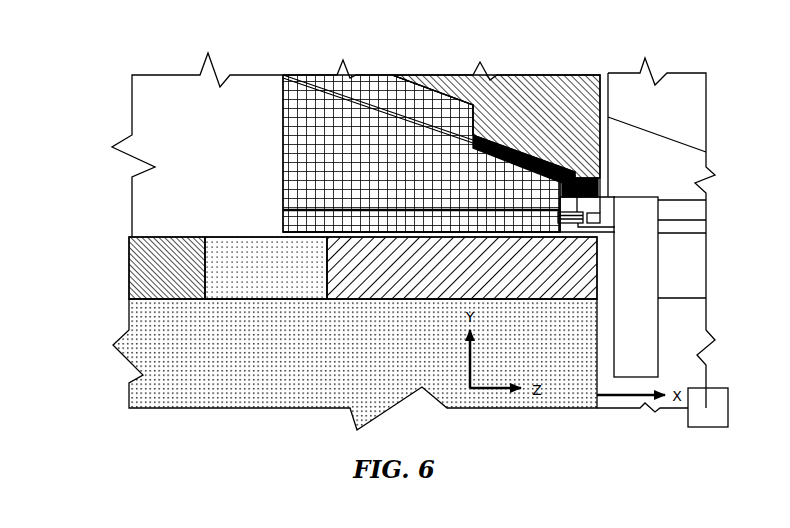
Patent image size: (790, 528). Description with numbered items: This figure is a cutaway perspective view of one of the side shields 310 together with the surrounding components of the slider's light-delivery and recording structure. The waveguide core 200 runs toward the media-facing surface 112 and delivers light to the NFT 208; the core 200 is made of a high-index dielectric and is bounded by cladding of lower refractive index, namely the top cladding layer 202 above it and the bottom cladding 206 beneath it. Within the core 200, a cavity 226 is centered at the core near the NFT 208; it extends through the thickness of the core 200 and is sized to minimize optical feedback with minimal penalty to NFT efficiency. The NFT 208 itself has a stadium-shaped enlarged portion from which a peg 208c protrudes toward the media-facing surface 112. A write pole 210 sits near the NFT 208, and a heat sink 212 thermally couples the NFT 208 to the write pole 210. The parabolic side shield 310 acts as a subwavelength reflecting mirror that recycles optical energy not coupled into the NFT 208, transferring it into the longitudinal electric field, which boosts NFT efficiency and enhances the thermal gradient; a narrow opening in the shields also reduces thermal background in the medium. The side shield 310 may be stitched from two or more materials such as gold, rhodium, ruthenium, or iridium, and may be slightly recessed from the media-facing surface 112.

The top cladding layer 202 is at (145, 99).
The heat sink 212 is at (295, 152).
The NFT 208 is at (283, 213).
The write pole 210 is at (548, 140).
The peg 208c is at (597, 213).
The core 200 is at (153, 268).
The cavity 226 is at (250, 278).
The bottom cladding 206 is at (287, 395).
The side shield 310 is at (645, 320).
The media-facing surface 112 is at (715, 428).